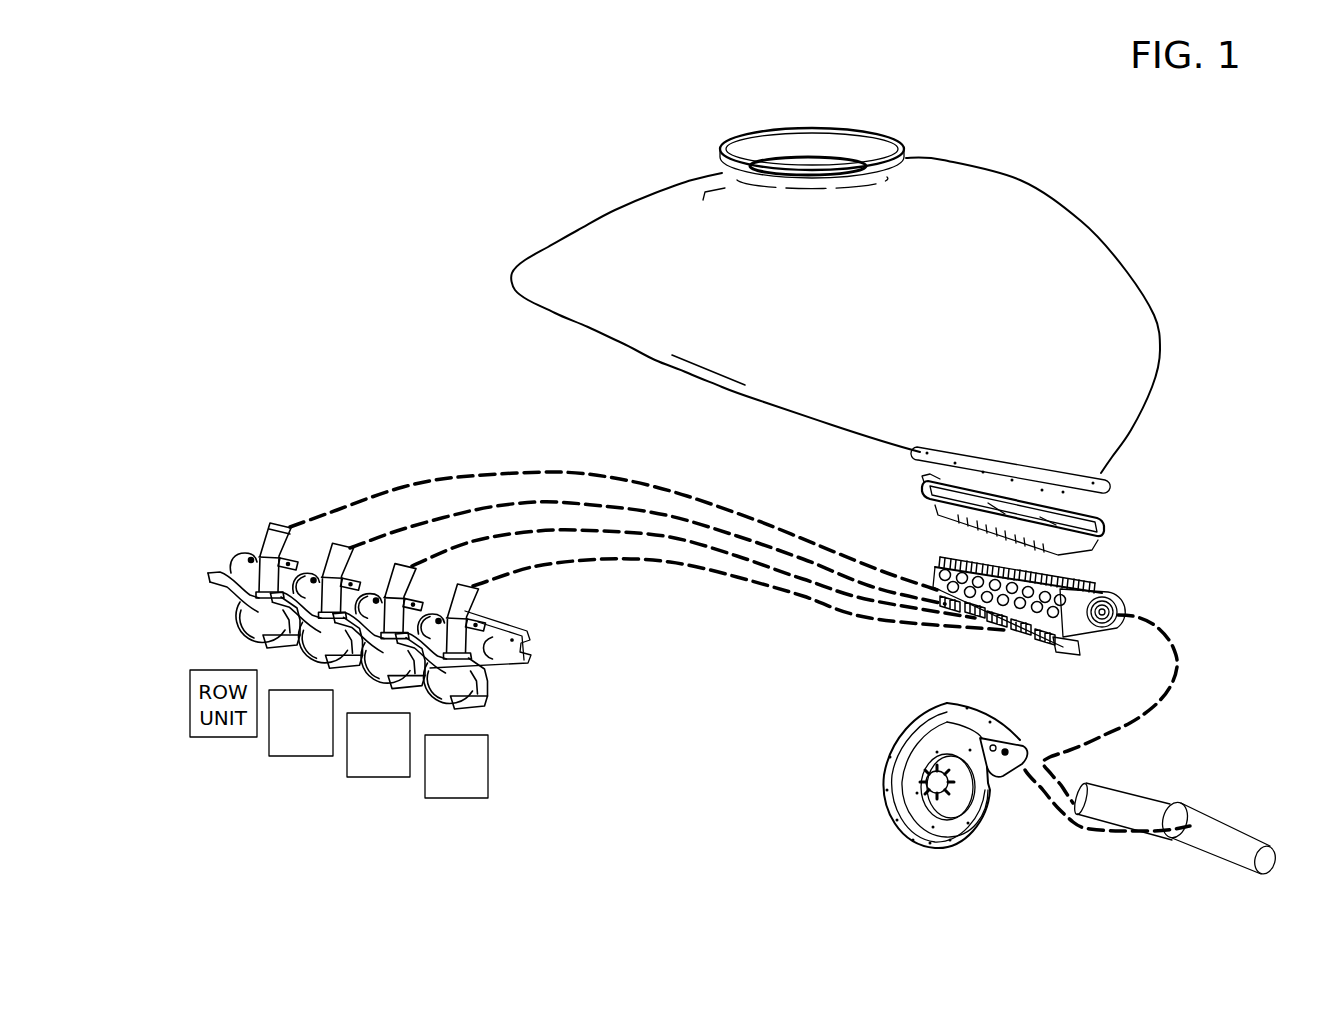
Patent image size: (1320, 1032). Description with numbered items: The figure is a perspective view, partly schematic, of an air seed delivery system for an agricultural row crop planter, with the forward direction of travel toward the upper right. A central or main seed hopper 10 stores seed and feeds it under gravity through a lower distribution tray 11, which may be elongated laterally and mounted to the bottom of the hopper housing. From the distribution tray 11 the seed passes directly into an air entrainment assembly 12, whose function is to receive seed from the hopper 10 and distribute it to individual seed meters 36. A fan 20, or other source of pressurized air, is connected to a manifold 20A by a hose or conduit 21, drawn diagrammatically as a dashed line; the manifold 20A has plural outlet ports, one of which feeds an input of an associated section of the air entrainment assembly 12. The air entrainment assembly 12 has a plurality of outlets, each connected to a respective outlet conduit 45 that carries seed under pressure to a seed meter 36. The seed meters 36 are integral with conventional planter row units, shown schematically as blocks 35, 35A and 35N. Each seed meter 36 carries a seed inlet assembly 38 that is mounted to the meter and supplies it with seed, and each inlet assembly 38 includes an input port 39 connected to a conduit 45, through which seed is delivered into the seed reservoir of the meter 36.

The seed hopper 10 is at (1018, 181).
The distribution tray 11 is at (1112, 519).
The air entrainment assembly 12 is at (1112, 591).
The fan 20 is at (947, 852).
The manifold 20A is at (1200, 806).
The conduit 21 is at (1079, 824).
The planter row unit 35 is at (453, 802).
The planter row unit 35A is at (380, 782).
The planter row unit 35N is at (301, 762).
The seed meter 36 is at (496, 677).
The seed inlet assembly 38 is at (265, 531).
The input port 39 is at (288, 519).
The outlet conduit 45 is at (385, 500).